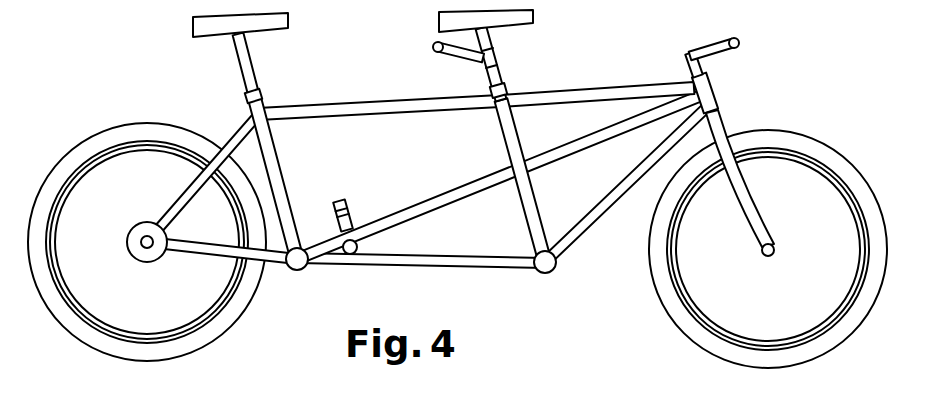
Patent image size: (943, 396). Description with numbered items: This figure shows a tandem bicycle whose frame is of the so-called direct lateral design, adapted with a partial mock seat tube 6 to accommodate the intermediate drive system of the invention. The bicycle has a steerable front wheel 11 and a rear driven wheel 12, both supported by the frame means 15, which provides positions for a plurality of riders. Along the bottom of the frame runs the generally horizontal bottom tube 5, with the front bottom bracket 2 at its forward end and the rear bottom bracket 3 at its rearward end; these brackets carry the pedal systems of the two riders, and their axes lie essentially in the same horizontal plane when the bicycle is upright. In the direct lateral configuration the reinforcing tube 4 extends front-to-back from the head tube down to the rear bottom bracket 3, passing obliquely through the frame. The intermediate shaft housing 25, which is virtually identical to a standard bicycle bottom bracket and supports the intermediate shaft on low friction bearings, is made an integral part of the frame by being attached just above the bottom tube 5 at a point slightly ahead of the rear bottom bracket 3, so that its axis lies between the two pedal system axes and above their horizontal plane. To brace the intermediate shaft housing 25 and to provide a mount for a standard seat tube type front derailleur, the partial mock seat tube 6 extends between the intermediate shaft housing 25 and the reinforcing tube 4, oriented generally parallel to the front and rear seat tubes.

The front bottom bracket 2 is at (557, 262).
The rear bottom bracket 3 is at (302, 266).
The reinforcing tube 4 is at (437, 200).
The bottom tube 5 is at (472, 263).
The partial mock seat tube 6 is at (351, 212).
The front wheel 11 is at (675, 310).
The rear driven wheel 12 is at (215, 325).
The frame means 15 is at (384, 100).
The intermediate shaft housing 25 is at (352, 253).